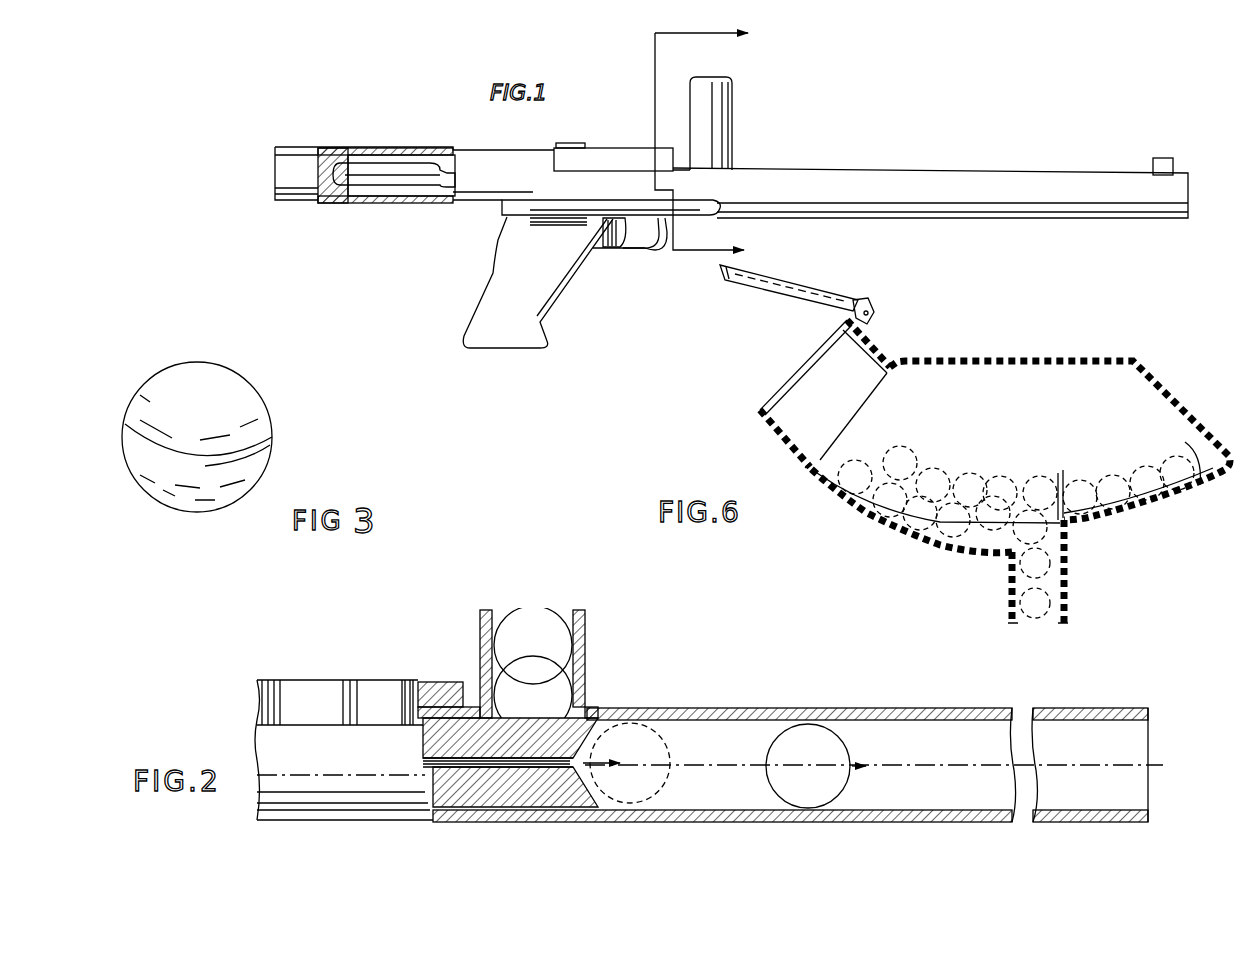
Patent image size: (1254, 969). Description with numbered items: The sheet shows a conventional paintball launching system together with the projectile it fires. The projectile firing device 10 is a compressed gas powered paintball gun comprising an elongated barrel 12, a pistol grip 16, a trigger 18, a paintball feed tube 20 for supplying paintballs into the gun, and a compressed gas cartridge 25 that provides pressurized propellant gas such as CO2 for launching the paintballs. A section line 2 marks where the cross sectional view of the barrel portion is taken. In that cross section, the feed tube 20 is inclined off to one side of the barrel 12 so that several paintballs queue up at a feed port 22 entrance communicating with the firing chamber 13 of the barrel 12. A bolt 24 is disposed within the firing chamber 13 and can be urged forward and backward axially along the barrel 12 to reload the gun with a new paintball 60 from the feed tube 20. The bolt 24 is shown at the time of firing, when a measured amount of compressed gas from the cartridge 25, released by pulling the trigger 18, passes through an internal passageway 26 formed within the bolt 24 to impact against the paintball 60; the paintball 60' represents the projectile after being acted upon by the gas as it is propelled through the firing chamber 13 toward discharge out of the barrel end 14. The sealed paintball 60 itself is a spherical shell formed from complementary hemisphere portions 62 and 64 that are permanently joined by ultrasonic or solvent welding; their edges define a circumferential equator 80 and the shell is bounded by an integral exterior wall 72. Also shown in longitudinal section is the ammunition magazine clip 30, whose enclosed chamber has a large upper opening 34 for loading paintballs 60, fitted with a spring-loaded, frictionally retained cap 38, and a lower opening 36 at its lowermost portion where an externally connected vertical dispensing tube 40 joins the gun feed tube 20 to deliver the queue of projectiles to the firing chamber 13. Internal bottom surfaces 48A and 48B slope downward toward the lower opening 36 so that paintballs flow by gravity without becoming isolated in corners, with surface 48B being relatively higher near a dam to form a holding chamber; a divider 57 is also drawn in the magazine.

In FIG. 1, the section line 2- 2 is at (701, 129).
In FIG. 1, the projectile firing device 10 is at (868, 168).
In FIG. 1, the elongated barrel 12 is at (1015, 170).
In FIG. 6, the elongated barrel 12 is at (1031, 396).
In FIG. 2, the firing chamber 13 is at (900, 757).
In FIG. 2, the barrel end 14 is at (1157, 725).
In FIG. 1, the pistol grip 16 is at (500, 273).
In FIG. 1, the trigger 18 is at (615, 247).
In FIG. 1, the paintball feed tube 20 is at (733, 100).
In FIG. 2, the paintball feed tube 20 is at (585, 612).
In FIG. 2, the feed port 22 is at (503, 727).
In FIG. 2, the bolt 24 is at (537, 770).
In FIG. 1, the compressed gas cartridge 25 is at (381, 170).
In FIG. 2, the internal passageway 26 is at (505, 768).
In FIG. 6, the ammunition magazine clip 30 is at (1161, 368).
In FIG. 6, the upper opening 34 is at (827, 387).
In FIG. 6, the lower opening 36 is at (1046, 630).
In FIG. 1, the cap 38 is at (777, 276).
In FIG. 6, the vertical dispensing tube 40 is at (1068, 603).
In FIG. 6, the internal bottom surface 48A is at (905, 518).
In FIG. 6, the internal bottom surface 48B is at (1185, 442).
In FIG. 6, the divider 57 is at (1060, 473).
In FIG. 3, the paintball 60 is at (203, 429).
In FIG. 6, the paintball 60 is at (1016, 519).
In FIG. 2, the paintball 60 is at (616, 719).
In FIG. 2, the paintball 60' is at (817, 729).
In FIG. 3, the hemisphere portion 62 is at (150, 400).
In FIG. 3, the hemisphere portion 64 is at (167, 490).
In FIG. 3, the exterior wall 72 is at (258, 463).
In FIG. 3, the circumferential equator 80 is at (125, 424).